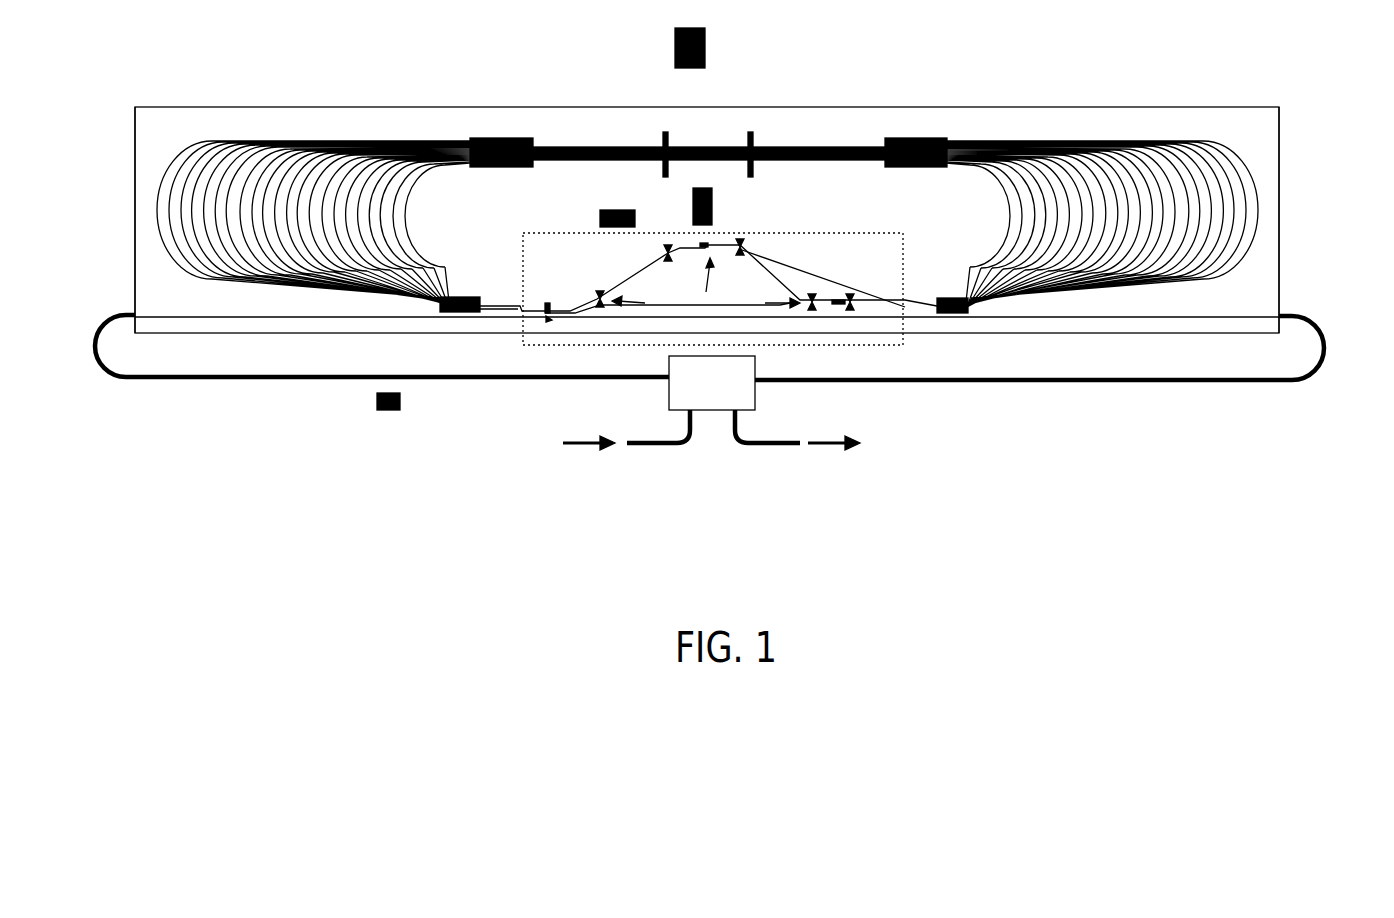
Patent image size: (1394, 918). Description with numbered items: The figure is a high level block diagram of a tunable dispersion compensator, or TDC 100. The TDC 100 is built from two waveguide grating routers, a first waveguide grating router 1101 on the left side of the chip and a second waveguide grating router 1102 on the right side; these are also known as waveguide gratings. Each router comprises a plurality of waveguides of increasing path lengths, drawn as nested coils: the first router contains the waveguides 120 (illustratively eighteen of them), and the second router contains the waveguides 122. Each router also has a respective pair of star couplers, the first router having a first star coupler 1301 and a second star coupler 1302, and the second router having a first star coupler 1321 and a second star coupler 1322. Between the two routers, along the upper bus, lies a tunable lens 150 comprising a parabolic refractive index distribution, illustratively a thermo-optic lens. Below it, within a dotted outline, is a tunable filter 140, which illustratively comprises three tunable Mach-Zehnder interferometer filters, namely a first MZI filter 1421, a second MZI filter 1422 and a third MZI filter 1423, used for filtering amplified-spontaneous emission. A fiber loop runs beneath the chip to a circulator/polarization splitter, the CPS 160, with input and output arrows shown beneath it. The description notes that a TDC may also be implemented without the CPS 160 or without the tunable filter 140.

The tunable dispersion compensator 100 is at (1117, 583).
The first waveguide grating router 1101 is at (155, 210).
The second waveguide grating router 1102 is at (1262, 207).
The waveguides of increasing path lengths 120 is at (426, 134).
The waveguides of increasing path lengths 122 is at (1202, 136).
The first star coupler 1301 is at (463, 312).
The second star coupler 1302 is at (503, 130).
The first star coupler 1321 is at (957, 313).
The second star coupler 1322 is at (907, 130).
The tunable filter 140 is at (719, 272).
The first tunable Mach-Zehnder interferometer filter 1421 is at (555, 310).
The second tunable Mach-Zehnder interferometer filter 1422 is at (712, 237).
The third tunable Mach-Zehnder interferometer filter 1423 is at (835, 300).
The tunable lens 150 is at (703, 130).
The circulator/polarization splitter 160 is at (755, 398).